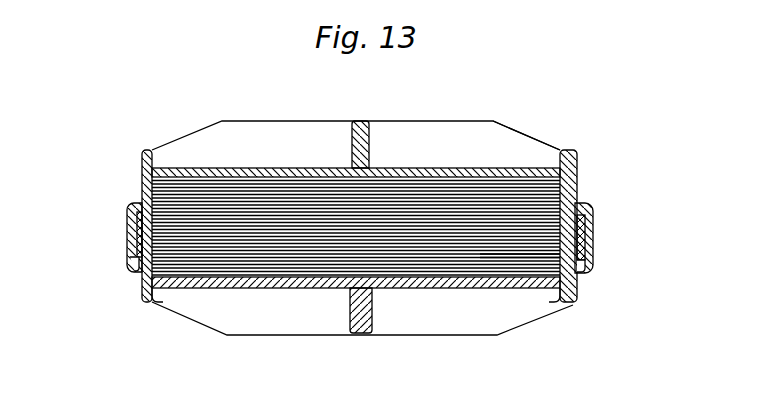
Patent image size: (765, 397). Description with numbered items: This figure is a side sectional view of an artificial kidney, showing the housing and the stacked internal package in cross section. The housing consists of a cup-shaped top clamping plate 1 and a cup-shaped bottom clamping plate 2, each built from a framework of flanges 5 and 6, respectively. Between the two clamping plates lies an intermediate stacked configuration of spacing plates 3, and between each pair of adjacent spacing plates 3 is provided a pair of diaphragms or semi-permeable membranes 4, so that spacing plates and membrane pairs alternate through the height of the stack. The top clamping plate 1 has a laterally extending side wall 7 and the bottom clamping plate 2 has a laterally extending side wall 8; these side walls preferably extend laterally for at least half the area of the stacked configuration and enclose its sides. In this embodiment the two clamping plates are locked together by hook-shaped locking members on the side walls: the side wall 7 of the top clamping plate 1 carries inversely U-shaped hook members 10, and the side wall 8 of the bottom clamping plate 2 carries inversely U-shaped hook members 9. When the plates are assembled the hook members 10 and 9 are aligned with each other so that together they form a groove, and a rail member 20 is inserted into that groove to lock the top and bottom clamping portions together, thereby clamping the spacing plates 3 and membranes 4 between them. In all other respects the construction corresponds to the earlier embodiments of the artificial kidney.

The top clamping plate 1 is at (263, 150).
The bottom clamping plate 2 is at (232, 302).
The spacing plates 3 is at (500, 265).
The semi-permeable membranes 4 is at (538, 257).
The flanges of top clamping plate 5 is at (500, 137).
The flanges of bottom clamping plate 6 is at (422, 312).
The laterally extending side wall of top clamping plate 7 is at (576, 177).
The laterally extending side wall of bottom clamping plate 8 is at (577, 273).
The hook-shaped locking member 9 is at (127, 207).
The hook member 10 is at (132, 272).
The rail member 20 is at (589, 218).